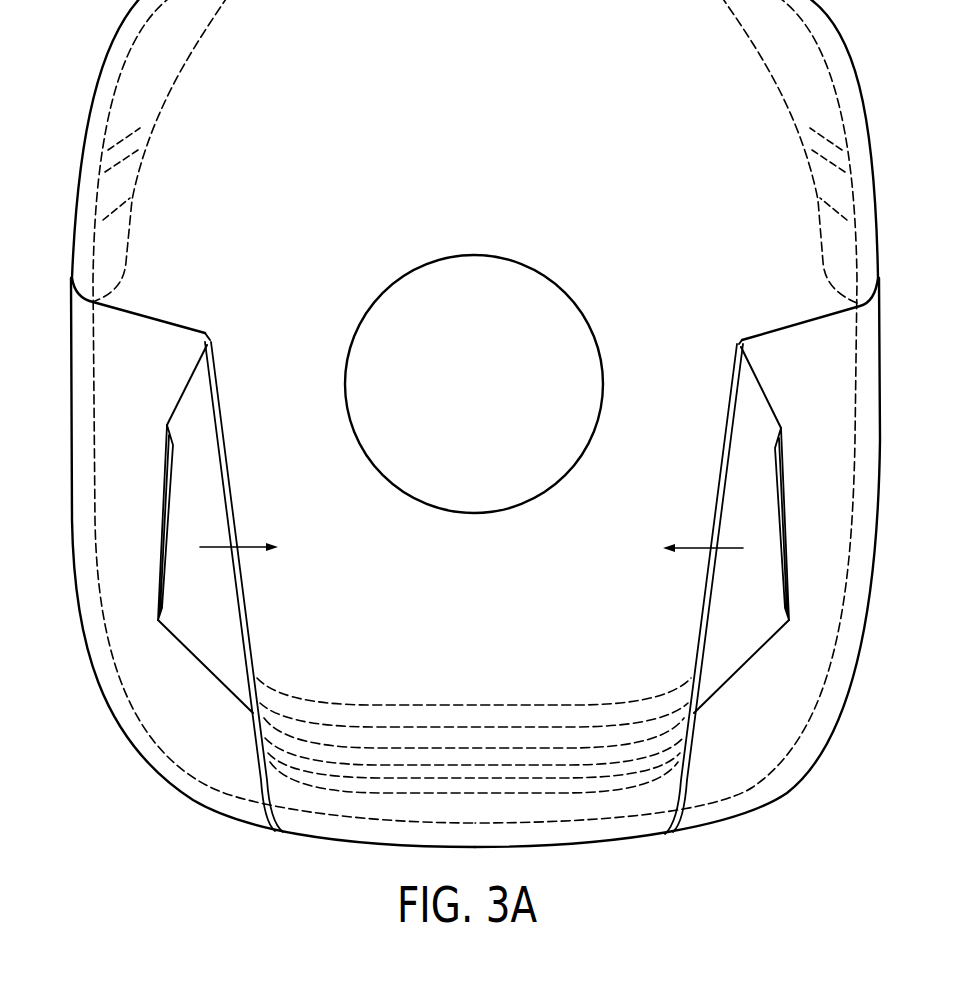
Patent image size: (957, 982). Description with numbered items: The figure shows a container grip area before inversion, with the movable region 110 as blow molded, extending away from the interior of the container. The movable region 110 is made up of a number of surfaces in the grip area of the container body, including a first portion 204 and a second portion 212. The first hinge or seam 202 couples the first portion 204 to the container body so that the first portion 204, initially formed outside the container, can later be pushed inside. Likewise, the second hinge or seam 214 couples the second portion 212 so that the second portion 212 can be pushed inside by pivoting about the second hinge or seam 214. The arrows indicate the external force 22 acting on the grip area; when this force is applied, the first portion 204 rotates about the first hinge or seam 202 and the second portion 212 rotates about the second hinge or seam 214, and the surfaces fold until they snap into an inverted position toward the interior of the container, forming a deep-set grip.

The movable region 110 is at (136, 628).
The external force 22 is at (250, 547).
The first hinge or seam 202 is at (252, 715).
The first portion 204 is at (185, 648).
The second portion 212 is at (178, 400).
The second hinge or seam 214 is at (207, 345).